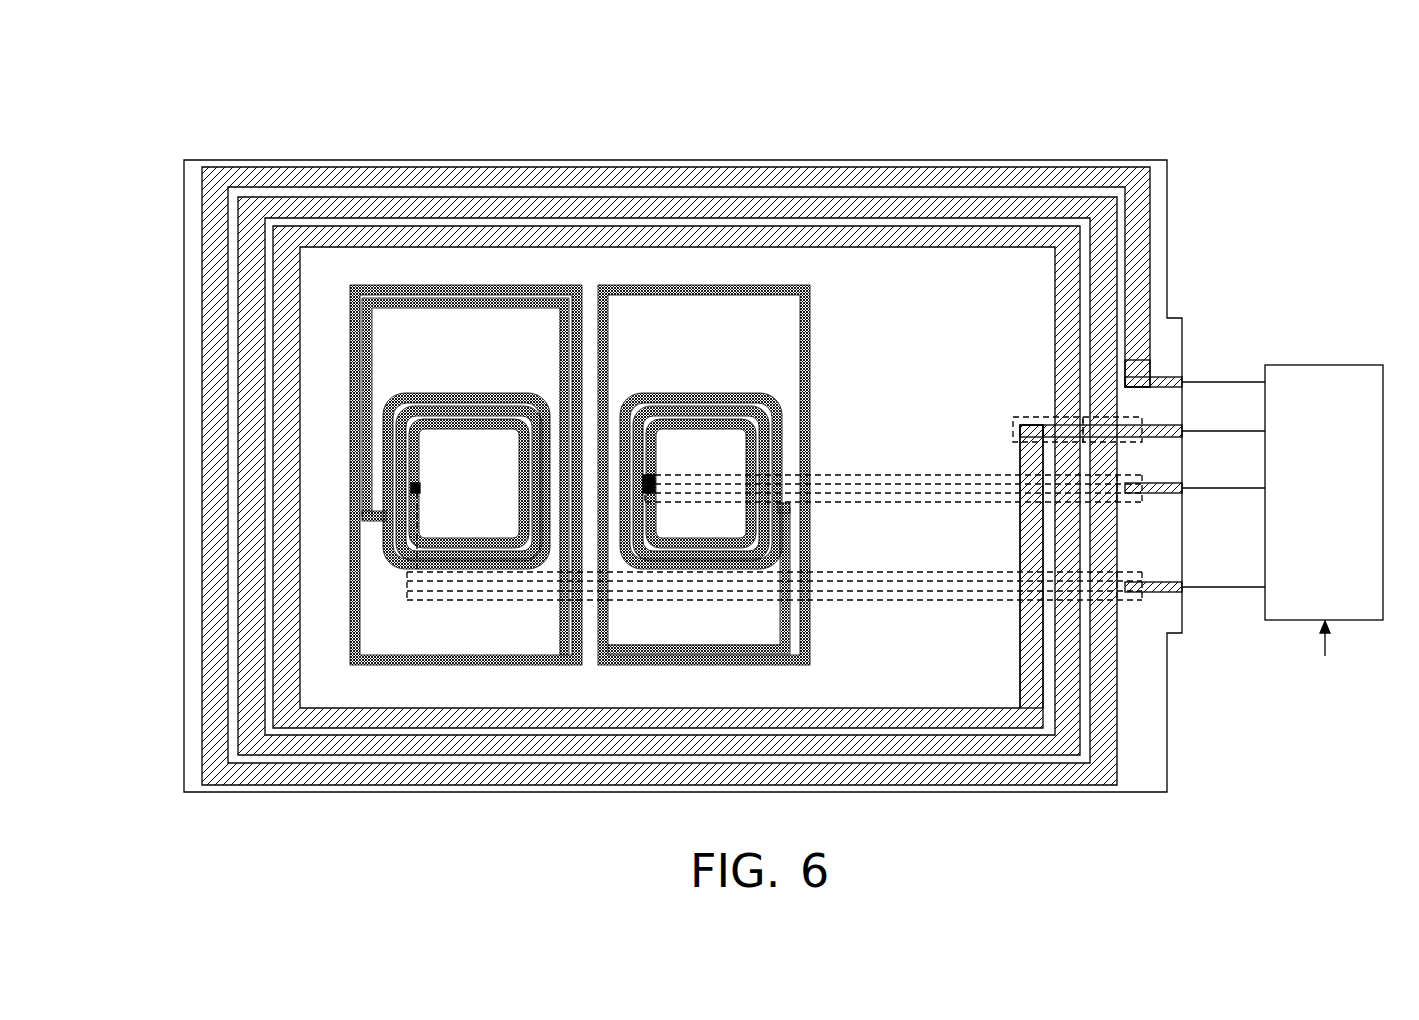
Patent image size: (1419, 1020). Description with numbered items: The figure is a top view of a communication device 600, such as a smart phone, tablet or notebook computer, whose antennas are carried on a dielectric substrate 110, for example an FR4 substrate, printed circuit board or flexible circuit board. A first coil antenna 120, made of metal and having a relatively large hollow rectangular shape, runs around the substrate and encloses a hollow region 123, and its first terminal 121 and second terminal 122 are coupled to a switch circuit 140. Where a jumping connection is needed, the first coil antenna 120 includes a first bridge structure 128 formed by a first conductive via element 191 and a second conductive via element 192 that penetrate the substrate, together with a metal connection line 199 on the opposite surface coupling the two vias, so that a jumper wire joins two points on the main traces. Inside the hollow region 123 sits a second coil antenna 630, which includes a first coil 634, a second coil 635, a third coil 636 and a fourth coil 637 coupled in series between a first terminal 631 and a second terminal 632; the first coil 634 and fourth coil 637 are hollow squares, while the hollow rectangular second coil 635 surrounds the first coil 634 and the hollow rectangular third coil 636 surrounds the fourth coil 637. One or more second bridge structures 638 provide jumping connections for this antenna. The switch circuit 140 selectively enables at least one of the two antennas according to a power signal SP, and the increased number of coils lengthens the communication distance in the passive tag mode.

The communication device 600 is at (185, 114).
The dielectric substrate 110 is at (183, 227).
The first coil antenna 120 is at (668, 166).
The hollow region 123 is at (943, 283).
The first terminal 121 is at (1185, 378).
The second terminal 122 is at (1185, 427).
The first bridge structure 128 is at (1026, 416).
The first conductive via element 191 is at (1031, 416).
The second conductive via element 192 is at (1133, 385).
The metal connection line 199 is at (1083, 416).
The switch circuit 140 is at (1325, 364).
The second coil antenna 630 is at (1265, 62).
The first coil 634 is at (705, 393).
The second coil 635 is at (812, 298).
The third coil 636 is at (440, 666).
The fourth coil 637 is at (468, 393).
The first terminal 631 is at (1185, 484).
The second terminal 632 is at (1185, 583).
The second bridge structure 638 is at (972, 512).
The power signal SP is at (1326, 658).